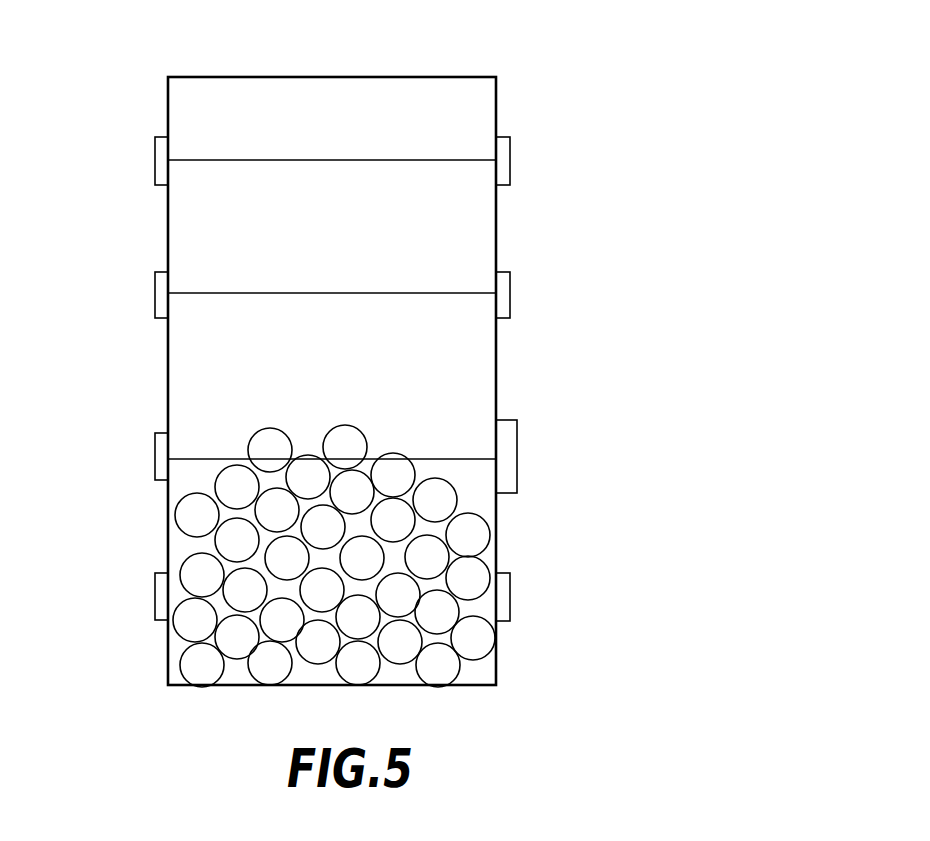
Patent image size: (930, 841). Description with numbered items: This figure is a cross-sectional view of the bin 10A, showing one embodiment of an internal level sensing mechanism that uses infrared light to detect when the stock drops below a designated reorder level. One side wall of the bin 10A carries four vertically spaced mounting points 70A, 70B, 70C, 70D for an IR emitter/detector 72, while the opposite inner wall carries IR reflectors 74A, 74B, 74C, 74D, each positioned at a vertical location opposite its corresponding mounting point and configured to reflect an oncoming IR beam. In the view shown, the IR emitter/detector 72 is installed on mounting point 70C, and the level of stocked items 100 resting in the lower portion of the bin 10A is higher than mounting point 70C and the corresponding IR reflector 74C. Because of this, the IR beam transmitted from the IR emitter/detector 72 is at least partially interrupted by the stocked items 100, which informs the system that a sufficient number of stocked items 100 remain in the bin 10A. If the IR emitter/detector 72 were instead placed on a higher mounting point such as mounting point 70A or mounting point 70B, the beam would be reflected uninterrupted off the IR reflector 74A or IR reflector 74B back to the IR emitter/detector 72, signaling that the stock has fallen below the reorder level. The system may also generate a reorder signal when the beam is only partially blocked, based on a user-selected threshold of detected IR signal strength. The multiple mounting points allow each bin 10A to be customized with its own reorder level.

The bin 10A is at (670, 90).
The IR emitter/detector mounting point 70A is at (512, 160).
The IR emitter/detector mounting point 70B is at (512, 293).
The IR emitter/detector mounting point 70C is at (510, 420).
The IR emitter/detector mounting point 70D is at (512, 597).
The IR emitter/detector 72 is at (510, 457).
The IR reflector 74A is at (155, 161).
The IR reflector 74B is at (155, 293).
The IR reflector 74C is at (155, 457).
The IR reflector 74D is at (155, 597).
The stocked items 100 is at (365, 437).